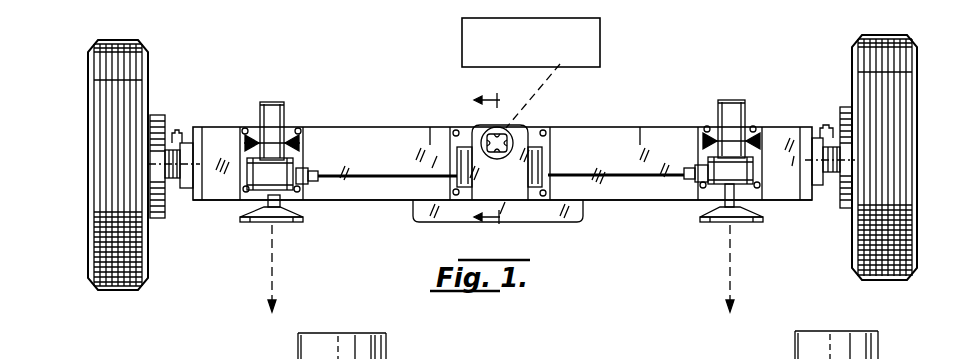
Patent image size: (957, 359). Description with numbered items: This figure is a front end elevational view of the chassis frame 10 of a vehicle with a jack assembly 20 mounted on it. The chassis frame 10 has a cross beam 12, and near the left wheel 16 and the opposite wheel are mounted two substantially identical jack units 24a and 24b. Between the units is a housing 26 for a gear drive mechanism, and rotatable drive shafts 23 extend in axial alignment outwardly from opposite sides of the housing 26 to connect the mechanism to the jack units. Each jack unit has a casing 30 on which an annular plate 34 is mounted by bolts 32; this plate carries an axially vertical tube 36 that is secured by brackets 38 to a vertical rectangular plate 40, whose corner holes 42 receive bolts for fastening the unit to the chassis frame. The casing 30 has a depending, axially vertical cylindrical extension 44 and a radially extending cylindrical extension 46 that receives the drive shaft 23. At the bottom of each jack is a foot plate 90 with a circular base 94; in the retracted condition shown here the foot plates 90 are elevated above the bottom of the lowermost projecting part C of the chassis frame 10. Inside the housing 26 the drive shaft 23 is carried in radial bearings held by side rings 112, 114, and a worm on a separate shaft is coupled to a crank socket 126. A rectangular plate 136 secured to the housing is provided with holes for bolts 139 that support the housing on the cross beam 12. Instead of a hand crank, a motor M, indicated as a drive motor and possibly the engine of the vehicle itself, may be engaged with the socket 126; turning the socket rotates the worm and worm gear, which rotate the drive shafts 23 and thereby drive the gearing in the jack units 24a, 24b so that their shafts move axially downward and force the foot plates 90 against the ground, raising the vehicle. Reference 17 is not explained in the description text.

The chassis frame 10 is at (388, 210).
The cross beam 12 is at (383, 127).
The left wheel 16 is at (118, 172).
The direction of travel arrow 17 is at (501, 158).
The jack assembly 20 is at (471, 124).
The drive shafts 23 is at (430, 127).
The jack unit 24a is at (740, 112).
The jack unit 24b is at (277, 114).
The housing 26 is at (524, 130).
The casing 30 is at (257, 172).
The bolts 32 is at (296, 160).
The annular plate 34 is at (246, 158).
The tube 36 is at (268, 112).
The brackets 38 is at (291, 142).
The rectangular plate 40 is at (245, 128).
The corner holes 42 is at (702, 137).
The cylindrical extension 44 is at (270, 192).
The cylindrical extension 46 is at (307, 172).
The foot plate 90 is at (283, 223).
The circular base 94 is at (286, 213).
The side ring 112 is at (459, 197).
The side ring 114 is at (534, 203).
The crank socket 126 is at (480, 200).
The rectangular plate 136 is at (544, 163).
The bolts 139 is at (549, 130).
The lowermost projecting part C is at (574, 221).
The motor M is at (585, 50).